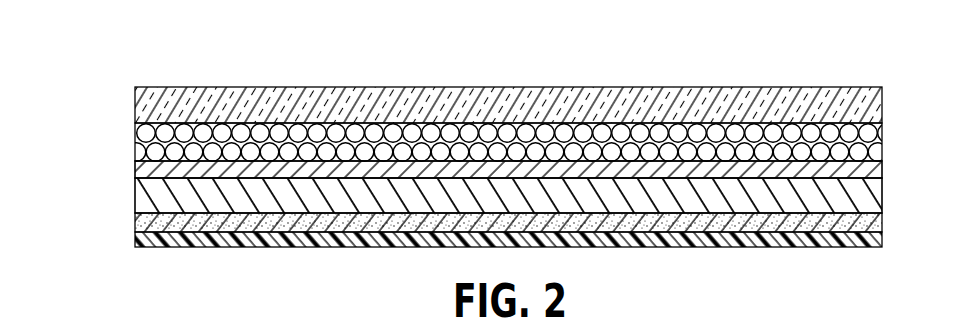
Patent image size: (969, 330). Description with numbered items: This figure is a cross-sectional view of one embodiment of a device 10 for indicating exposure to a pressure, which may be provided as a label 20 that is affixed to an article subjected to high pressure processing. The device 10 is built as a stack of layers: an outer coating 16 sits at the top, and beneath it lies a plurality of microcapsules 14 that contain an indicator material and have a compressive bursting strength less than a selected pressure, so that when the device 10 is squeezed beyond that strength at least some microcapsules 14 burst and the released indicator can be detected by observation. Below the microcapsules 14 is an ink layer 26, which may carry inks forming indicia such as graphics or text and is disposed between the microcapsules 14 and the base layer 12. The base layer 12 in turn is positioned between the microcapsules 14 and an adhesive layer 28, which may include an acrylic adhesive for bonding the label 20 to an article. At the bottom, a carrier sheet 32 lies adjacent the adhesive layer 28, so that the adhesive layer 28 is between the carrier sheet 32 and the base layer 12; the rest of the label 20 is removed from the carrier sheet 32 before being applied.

The device 10 is at (249, 53).
The label 20 is at (70, 247).
The coating 16 is at (871, 105).
The plurality of microcapsules 14 is at (126, 163).
The ink layer 26 is at (872, 168).
The base layer 12 is at (143, 193).
The adhesive layer 28 is at (871, 222).
The carrier sheet 32 is at (143, 239).